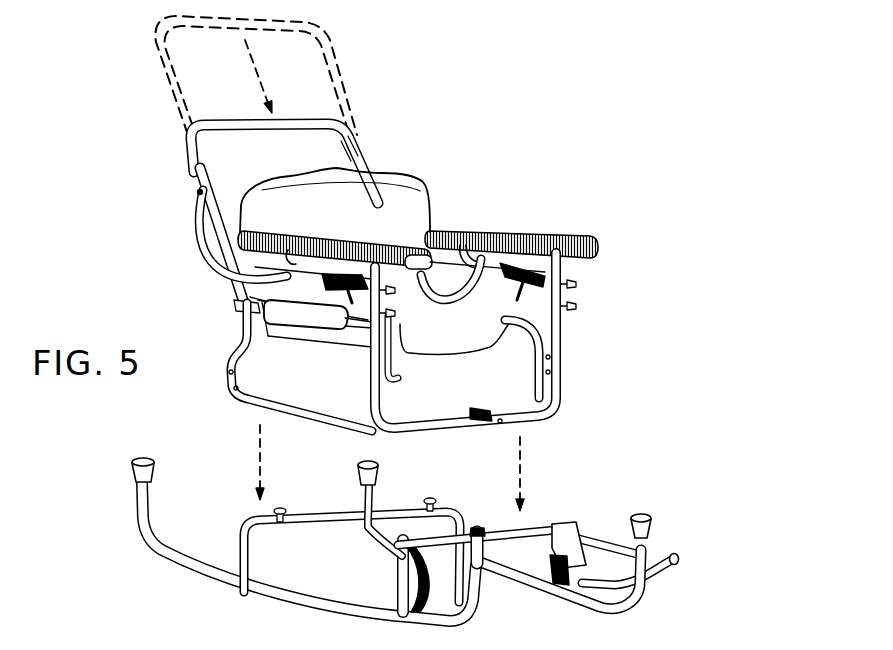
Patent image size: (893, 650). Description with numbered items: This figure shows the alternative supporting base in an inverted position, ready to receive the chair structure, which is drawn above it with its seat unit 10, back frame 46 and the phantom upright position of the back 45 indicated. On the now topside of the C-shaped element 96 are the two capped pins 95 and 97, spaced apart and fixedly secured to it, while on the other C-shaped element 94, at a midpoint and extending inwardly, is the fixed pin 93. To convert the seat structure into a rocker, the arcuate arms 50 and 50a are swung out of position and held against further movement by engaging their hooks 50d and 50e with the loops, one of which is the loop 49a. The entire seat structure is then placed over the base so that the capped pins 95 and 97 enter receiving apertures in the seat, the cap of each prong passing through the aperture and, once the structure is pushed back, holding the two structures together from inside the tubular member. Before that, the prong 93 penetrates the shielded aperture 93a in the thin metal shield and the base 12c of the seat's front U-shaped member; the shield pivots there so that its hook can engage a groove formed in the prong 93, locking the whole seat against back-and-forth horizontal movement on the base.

The seat unit 10 is at (493, 377).
The base of the front U-shaped member of the seat 12c is at (432, 432).
The back rest (phantom upright position) 45 is at (330, 124).
The back frame 46 is at (284, 163).
The loop 49a is at (458, 240).
The arcuate arm 50 is at (200, 256).
The arcuate arm 50a is at (461, 279).
The hook 50d is at (290, 262).
The hook 50e is at (478, 266).
The pin 93 is at (480, 522).
The shielded aperture 93a is at (501, 421).
The C-shaped element 94 is at (533, 533).
The capped pin 95 is at (281, 509).
The C-shaped element 96 is at (323, 512).
The capped pin 97 is at (430, 500).